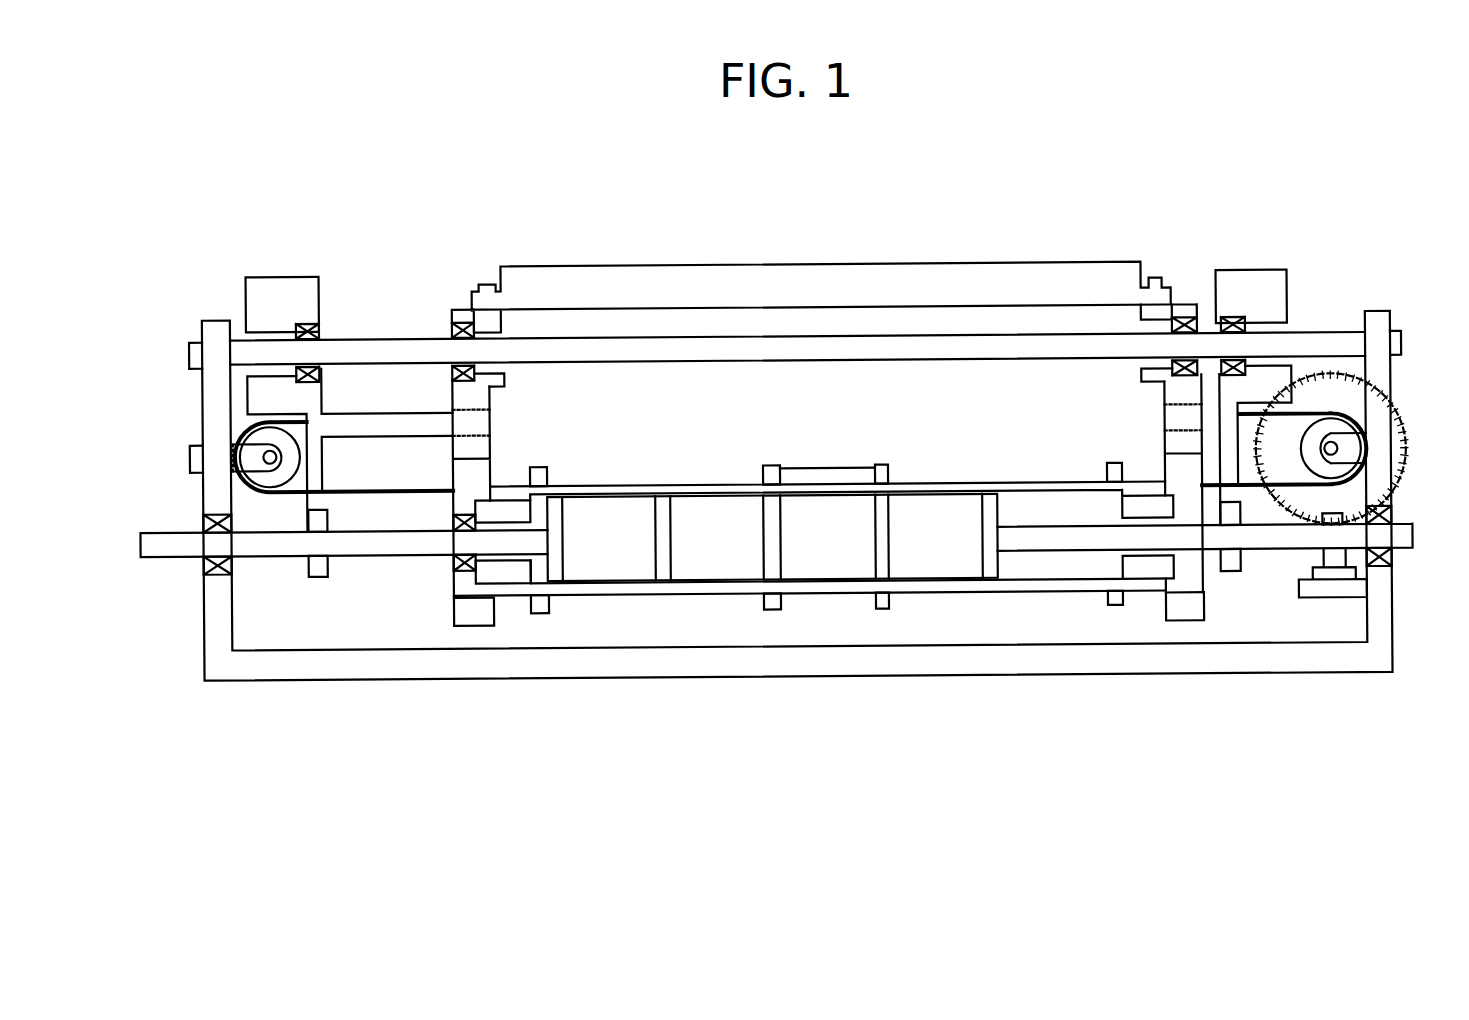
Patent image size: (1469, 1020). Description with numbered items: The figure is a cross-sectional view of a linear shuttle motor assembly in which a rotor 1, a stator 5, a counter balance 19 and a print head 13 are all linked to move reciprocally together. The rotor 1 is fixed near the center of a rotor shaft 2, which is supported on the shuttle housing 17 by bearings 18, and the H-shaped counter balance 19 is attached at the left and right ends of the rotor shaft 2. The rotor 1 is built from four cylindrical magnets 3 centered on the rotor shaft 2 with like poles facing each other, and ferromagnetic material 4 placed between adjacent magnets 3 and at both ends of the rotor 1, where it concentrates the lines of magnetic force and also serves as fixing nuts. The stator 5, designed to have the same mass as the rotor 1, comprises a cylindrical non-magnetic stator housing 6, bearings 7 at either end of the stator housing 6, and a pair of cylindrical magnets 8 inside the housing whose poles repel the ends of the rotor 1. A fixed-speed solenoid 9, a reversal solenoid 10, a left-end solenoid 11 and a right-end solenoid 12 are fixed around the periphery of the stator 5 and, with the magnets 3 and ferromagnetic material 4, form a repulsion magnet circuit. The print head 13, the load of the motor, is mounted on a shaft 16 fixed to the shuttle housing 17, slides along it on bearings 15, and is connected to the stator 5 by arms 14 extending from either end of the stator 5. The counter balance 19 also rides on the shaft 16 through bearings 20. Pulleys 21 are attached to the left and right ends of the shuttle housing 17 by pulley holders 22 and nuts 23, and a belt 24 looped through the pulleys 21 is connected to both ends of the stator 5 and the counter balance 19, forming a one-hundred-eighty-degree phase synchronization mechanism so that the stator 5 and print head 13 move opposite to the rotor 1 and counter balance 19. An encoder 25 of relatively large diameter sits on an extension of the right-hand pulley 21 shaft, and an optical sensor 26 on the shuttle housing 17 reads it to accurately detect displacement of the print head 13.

The rotor 1 is at (998, 565).
The rotor shaft 2 is at (1045, 537).
The cylindrical magnets 3 is at (618, 578).
The ferromagnetic material 4 is at (553, 578).
The stator 5 is at (935, 588).
The stator housing 6 is at (905, 598).
The bearings 7 is at (452, 566).
The cylindrical magnets 8 is at (507, 575).
The fixed-speed solenoid 9 is at (820, 472).
The reversal solenoid 10 is at (765, 474).
The left-end solenoid 11 is at (550, 473).
The right-end solenoid 12 is at (1112, 470).
The print head 13 is at (725, 285).
The arms 14 is at (490, 403).
The bearings 15 is at (462, 320).
The shaft 16 is at (397, 343).
The shuttle housing 17 is at (690, 668).
The bearings 18 is at (203, 565).
The counter balance 19 is at (285, 290).
The bearings 20 is at (320, 330).
The pulleys 21 is at (262, 476).
The pulley holders 22 is at (278, 456).
The nuts 23 is at (189, 450).
The belt 24 is at (383, 488).
The encoder 25 is at (1337, 385).
The optical sensor 26 is at (1318, 577).